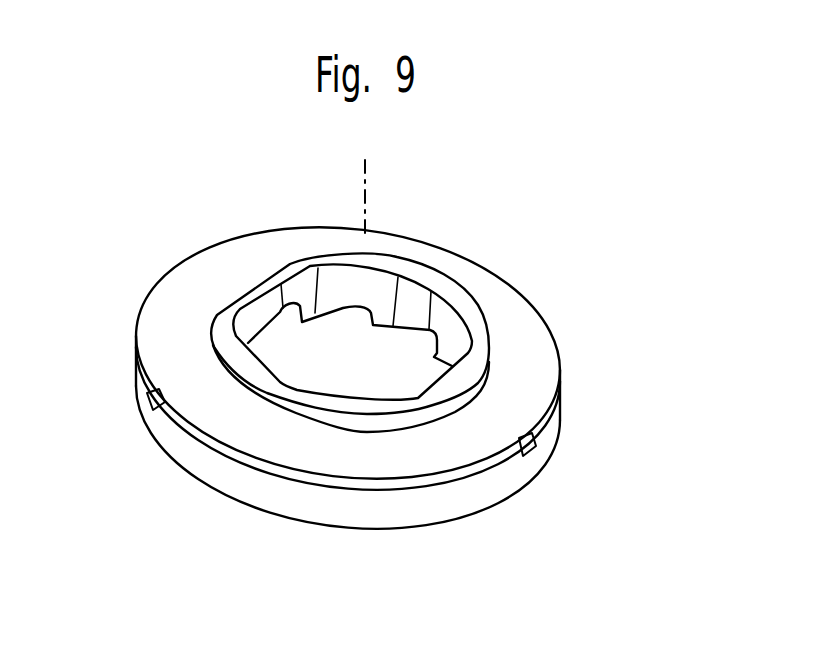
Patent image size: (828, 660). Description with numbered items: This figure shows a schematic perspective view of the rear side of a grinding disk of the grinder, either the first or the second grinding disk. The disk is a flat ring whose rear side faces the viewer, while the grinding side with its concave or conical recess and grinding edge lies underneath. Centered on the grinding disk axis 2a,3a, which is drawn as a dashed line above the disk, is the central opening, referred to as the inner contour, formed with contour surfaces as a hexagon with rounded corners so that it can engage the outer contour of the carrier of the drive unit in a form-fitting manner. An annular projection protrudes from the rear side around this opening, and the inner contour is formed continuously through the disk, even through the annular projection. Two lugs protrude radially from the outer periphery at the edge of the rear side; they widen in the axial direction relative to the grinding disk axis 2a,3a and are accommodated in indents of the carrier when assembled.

The grinding disk axis 2a,3a is at (365, 190).